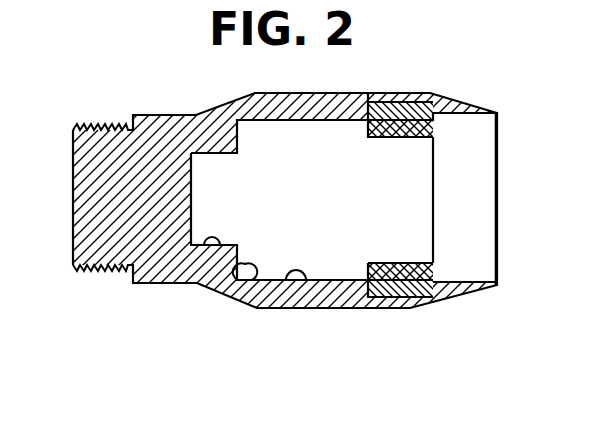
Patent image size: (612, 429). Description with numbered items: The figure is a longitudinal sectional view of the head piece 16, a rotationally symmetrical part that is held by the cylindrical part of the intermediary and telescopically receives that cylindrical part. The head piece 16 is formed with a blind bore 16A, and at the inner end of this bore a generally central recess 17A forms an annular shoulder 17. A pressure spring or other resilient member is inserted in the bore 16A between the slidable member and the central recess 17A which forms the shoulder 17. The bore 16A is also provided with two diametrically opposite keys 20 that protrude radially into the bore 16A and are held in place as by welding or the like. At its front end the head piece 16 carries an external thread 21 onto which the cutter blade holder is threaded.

The head piece 16 is at (350, 298).
The blind bore 16A is at (300, 284).
The annular shoulder 17 is at (245, 284).
The central recess 17A is at (208, 253).
The keys 20 is at (391, 263).
The external thread 21 is at (82, 272).